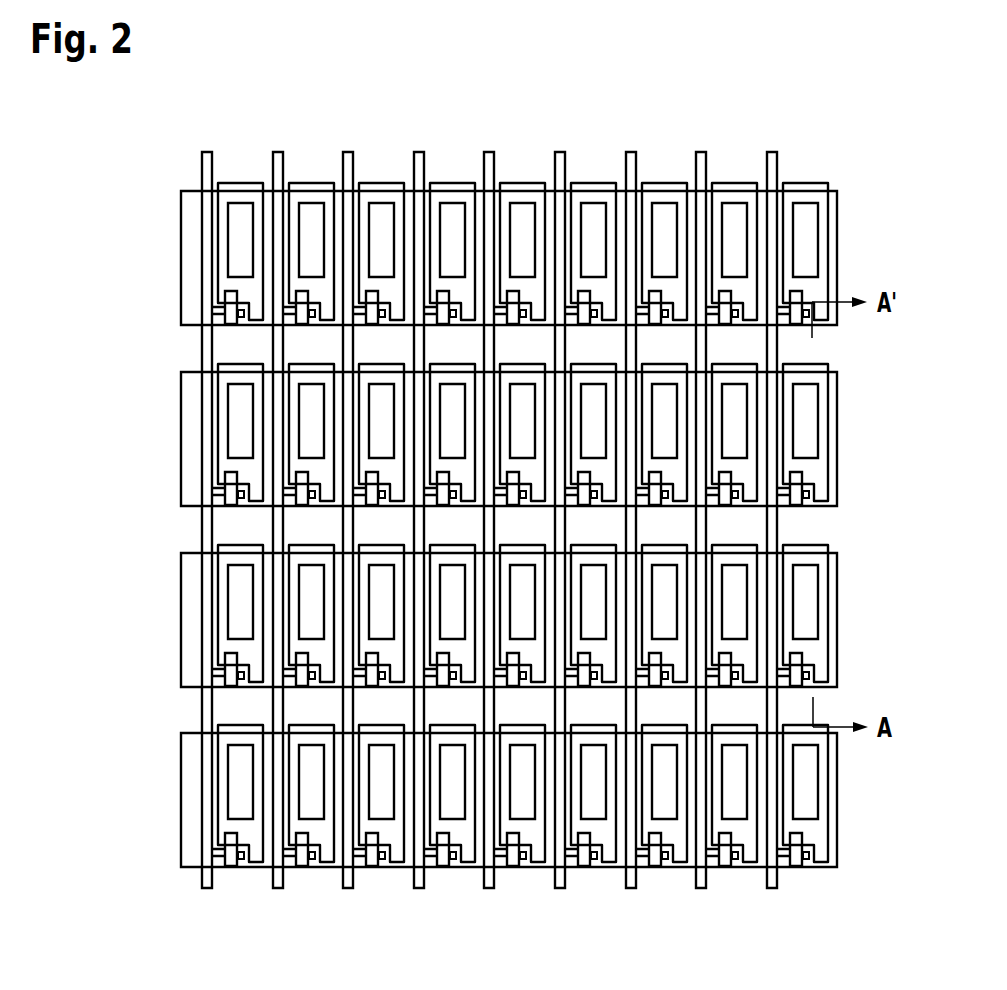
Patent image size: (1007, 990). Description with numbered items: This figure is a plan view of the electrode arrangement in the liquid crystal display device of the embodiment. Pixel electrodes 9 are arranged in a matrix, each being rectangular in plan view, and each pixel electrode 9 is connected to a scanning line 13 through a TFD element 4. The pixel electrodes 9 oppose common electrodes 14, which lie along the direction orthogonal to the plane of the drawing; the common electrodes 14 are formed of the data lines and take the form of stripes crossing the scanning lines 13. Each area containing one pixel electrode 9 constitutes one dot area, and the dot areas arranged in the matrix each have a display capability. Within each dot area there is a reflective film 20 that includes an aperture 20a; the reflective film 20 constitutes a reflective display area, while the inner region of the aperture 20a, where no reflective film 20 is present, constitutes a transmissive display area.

The TFD element 4 is at (377, 874).
The pixel electrode 9 is at (241, 547).
The scanning line 13 is at (208, 348).
The common electrode 14 is at (186, 303).
The reflective film 20 is at (388, 740).
The aperture 20a is at (377, 802).